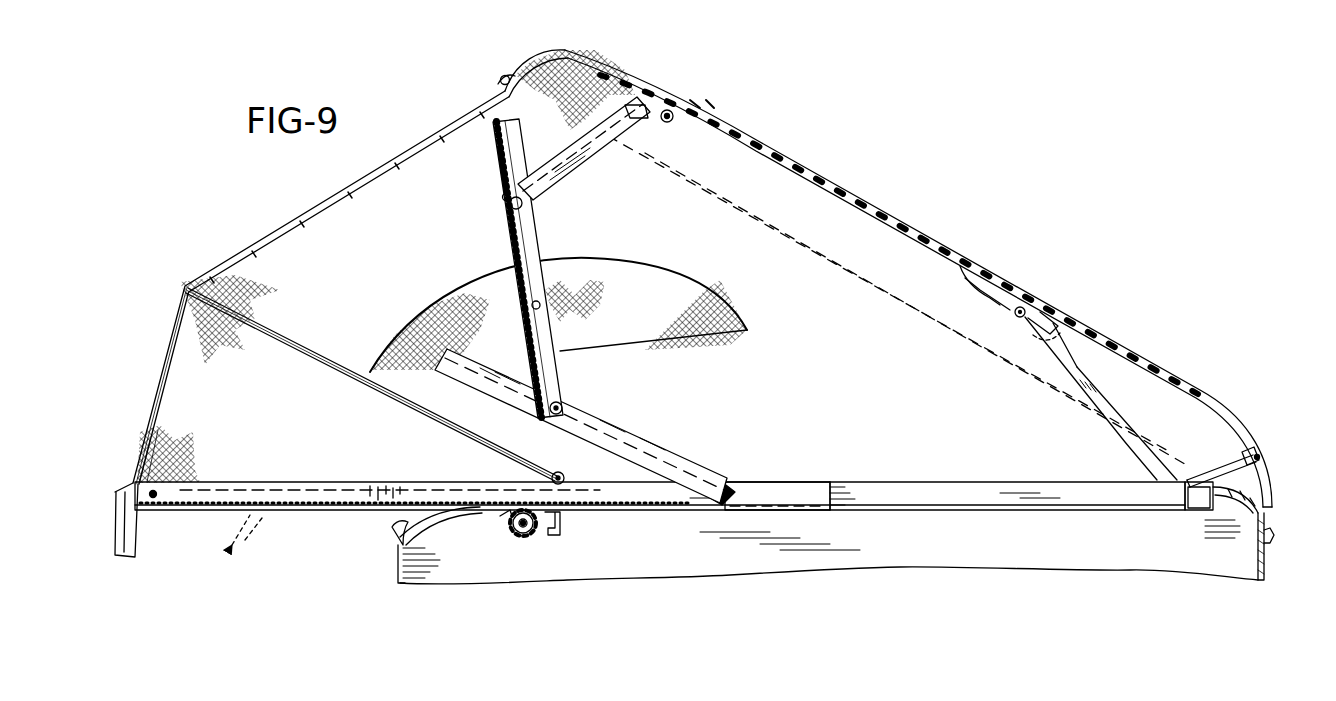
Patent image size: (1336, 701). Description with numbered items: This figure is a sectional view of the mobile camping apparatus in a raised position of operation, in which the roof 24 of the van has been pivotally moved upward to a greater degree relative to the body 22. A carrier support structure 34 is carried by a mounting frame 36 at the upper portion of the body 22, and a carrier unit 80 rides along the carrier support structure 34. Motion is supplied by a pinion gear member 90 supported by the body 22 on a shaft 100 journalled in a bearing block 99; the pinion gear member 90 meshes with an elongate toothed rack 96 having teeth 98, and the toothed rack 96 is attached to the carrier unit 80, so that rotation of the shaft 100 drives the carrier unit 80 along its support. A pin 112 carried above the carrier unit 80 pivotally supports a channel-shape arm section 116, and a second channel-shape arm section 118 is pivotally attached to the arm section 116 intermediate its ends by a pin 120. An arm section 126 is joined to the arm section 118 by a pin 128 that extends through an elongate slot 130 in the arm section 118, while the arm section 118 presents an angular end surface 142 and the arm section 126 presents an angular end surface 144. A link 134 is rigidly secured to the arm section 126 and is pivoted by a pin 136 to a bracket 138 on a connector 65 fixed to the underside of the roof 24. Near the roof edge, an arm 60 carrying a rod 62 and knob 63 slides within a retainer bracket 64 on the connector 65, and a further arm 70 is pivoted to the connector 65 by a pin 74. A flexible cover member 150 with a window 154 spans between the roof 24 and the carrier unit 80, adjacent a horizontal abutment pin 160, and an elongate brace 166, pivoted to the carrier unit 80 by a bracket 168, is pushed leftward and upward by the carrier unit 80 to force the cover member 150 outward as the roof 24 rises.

The body 22 is at (398, 560).
The roof 24 is at (752, 133).
The carrier support structure 34 is at (933, 497).
The mounting frame 36 is at (405, 520).
The arm 60 is at (1075, 367).
The rod 62 is at (1020, 308).
The knob 63 is at (1055, 298).
The retainer bracket 64 is at (960, 268).
The connector 65 is at (710, 106).
The arm 70 is at (1222, 462).
The pin 74 is at (1262, 462).
The carrier unit 80 is at (778, 490).
The pinion gear member 90 is at (540, 535).
The toothed rack 96 is at (315, 487).
The teeth 98 is at (240, 537).
The bearing block 99 is at (502, 528).
The shaft 100 is at (522, 535).
The pin 112 is at (708, 490).
The channel-shape arm section 116 is at (625, 438).
The channel-shape arm section 118 is at (525, 245).
The pin 120 is at (555, 405).
The arm section 126 is at (590, 165).
The pin 128 is at (528, 203).
The elongate slot 130 is at (500, 170).
The link 134 is at (655, 112).
The pin 136 is at (665, 120).
The bracket 138 is at (674, 108).
The angular end surface 142 is at (548, 418).
The angular end surface 144 is at (503, 206).
The flexible cover member 150 is at (330, 200).
The window 154 is at (640, 270).
The horizontal abutment pin 160 is at (153, 497).
The elongate brace 166 is at (312, 350).
The bracket 168 is at (590, 495).